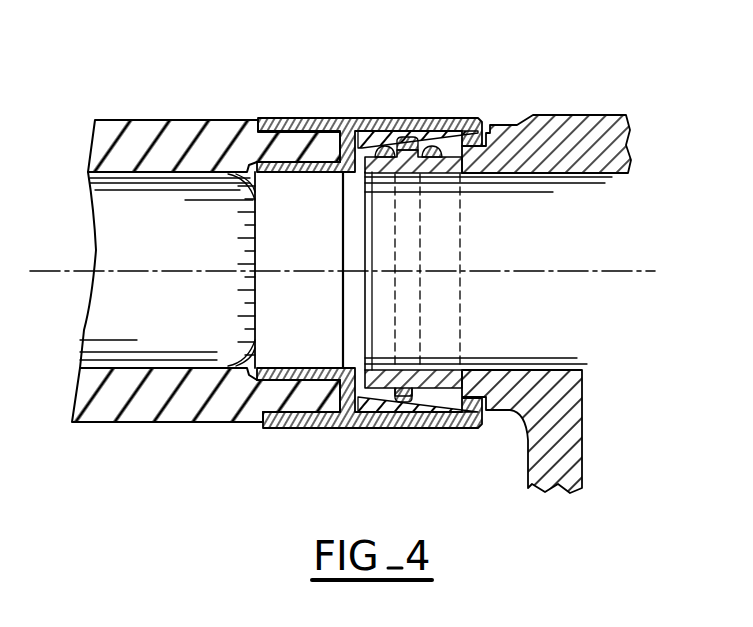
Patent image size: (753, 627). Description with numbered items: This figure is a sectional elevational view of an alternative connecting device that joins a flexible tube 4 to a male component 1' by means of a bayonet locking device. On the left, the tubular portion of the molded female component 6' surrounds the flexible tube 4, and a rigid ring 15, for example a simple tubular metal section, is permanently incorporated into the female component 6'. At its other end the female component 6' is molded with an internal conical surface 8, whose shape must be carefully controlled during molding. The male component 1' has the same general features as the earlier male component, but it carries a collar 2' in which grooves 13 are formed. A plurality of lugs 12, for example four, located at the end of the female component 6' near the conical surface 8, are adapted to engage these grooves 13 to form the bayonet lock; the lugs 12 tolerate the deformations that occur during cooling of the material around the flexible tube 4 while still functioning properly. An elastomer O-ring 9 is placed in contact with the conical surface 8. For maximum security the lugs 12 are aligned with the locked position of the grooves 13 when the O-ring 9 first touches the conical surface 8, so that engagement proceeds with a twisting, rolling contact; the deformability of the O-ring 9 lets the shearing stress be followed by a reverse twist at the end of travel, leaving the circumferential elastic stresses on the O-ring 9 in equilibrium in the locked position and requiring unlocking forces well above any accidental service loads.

The flexible tube 4 is at (170, 143).
The female component 6' is at (369, 238).
The elastomer O-ring 9 is at (410, 135).
The lugs 12 is at (490, 128).
The grooves 13 is at (511, 121).
The collar 2' is at (553, 320).
The male component 1' is at (488, 273).
The rigid ring 15 is at (298, 172).
The internal conical surface 8 is at (412, 418).